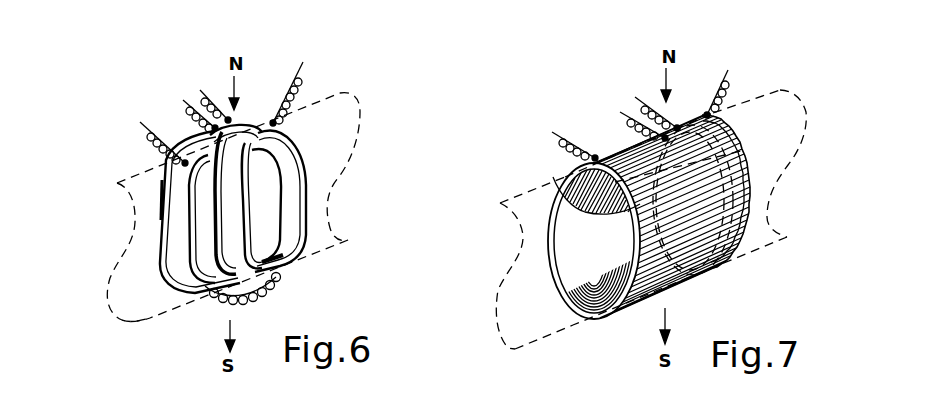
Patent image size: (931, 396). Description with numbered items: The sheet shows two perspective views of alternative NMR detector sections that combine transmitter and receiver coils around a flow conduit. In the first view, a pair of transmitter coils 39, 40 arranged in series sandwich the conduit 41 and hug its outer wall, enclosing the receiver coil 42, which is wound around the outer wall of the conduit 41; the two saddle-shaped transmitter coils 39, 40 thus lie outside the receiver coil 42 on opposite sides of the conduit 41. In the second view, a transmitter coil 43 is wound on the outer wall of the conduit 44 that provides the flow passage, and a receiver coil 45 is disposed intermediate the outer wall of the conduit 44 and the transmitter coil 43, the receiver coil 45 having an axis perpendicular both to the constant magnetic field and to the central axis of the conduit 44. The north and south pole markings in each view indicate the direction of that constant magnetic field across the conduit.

In FIG. 6, the transmitter coil 39 is at (163, 184).
In FIG. 6, the transmitter coil 40 is at (308, 232).
In FIG. 6, the conduit 41 is at (150, 319).
In FIG. 6, the receiver coil 42 is at (200, 268).
In FIG. 7, the transmitter coil 43 is at (563, 172).
In FIG. 7, the conduit 44 is at (567, 323).
In FIG. 7, the receiver coil 45 is at (749, 160).